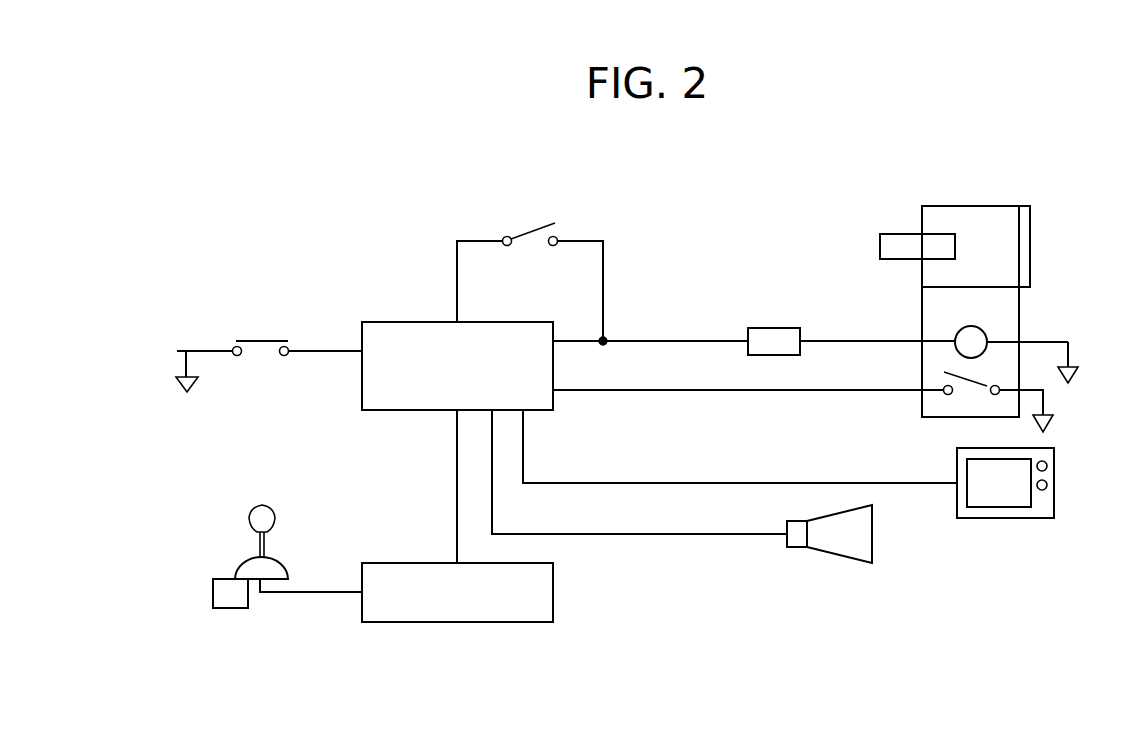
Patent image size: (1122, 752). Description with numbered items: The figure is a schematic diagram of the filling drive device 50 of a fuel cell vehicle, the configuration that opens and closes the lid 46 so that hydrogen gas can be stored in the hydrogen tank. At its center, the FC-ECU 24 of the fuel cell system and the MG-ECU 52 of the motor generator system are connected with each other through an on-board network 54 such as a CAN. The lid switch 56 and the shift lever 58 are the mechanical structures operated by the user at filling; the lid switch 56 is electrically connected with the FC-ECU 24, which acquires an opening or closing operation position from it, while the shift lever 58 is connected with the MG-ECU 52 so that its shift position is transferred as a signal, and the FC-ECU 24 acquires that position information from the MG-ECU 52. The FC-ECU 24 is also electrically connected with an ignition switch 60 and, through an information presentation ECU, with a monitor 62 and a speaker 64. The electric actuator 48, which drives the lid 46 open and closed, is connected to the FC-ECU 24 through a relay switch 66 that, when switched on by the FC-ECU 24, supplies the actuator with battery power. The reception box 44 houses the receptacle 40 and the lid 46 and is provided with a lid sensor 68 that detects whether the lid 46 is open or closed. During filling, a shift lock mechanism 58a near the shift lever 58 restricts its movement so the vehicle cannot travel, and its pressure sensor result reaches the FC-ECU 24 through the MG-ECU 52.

The filling drive device 50 is at (300, 201).
The FC-ECU 24 is at (398, 320).
The MG-ECU 52 is at (401, 562).
The lid switch 56 is at (261, 340).
The ignition switch 60 is at (528, 233).
The relay switch 66 is at (776, 328).
The reception box 44 is at (968, 206).
The lid 46 is at (1023, 243).
The receptacle 40 is at (897, 233).
The electric actuator 48 is at (962, 327).
The lid sensor 68 is at (973, 383).
The monitor 62 is at (1055, 476).
The speaker 64 is at (873, 534).
The on-board network 54 is at (670, 559).
The shift lever 58 is at (259, 503).
The shift lock mechanism 58a is at (231, 609).